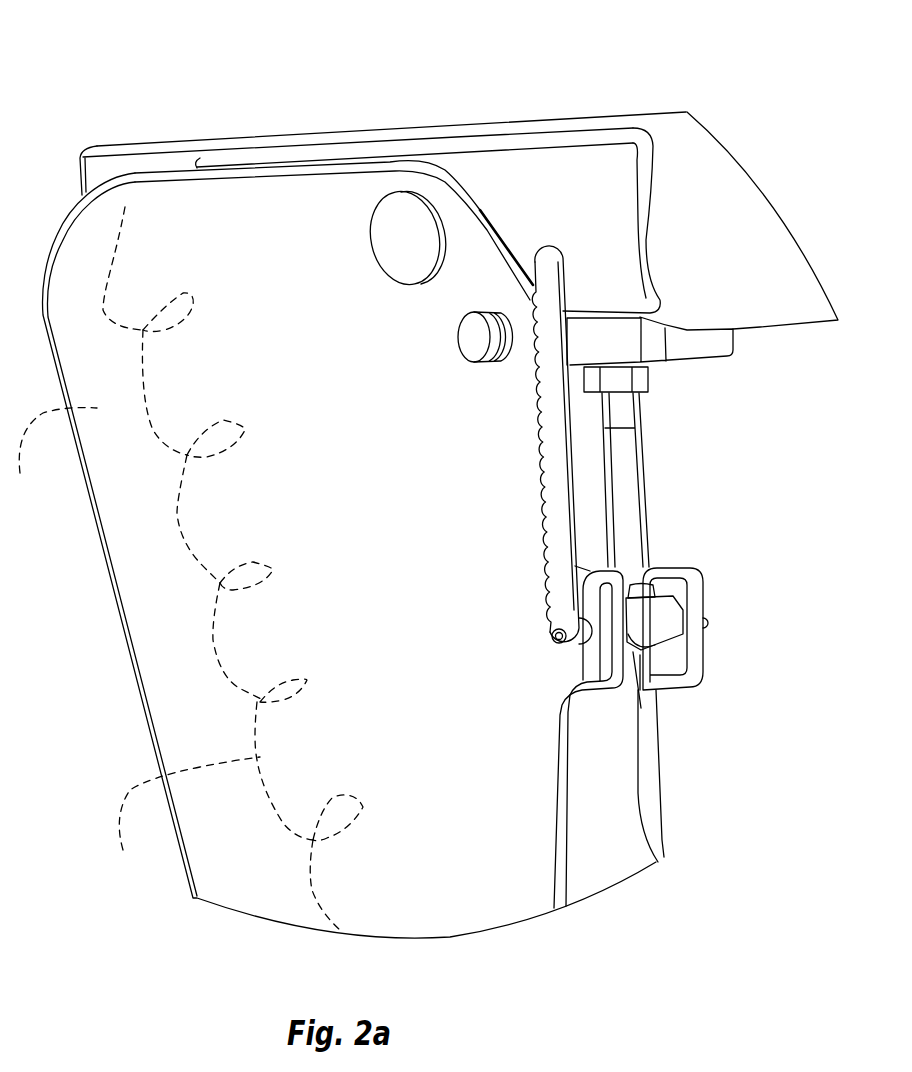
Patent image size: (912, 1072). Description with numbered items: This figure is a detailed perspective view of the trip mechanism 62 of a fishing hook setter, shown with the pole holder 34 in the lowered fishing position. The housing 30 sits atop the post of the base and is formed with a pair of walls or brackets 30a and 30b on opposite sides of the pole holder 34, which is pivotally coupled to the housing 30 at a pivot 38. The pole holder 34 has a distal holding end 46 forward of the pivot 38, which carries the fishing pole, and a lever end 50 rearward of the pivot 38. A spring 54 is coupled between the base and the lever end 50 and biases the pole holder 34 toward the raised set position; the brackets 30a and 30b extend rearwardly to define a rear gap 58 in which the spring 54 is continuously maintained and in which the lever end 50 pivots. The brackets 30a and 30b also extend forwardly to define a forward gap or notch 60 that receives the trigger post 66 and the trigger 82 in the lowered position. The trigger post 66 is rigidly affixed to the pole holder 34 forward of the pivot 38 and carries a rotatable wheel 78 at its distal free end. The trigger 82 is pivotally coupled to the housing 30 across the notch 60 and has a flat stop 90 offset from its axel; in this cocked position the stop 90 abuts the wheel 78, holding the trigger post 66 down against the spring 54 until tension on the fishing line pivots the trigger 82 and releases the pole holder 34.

The housing 30 is at (141, 686).
The bracket or flange 30a is at (577, 675).
The bracket or flange 30b is at (704, 655).
The pole holder 34 is at (680, 125).
The pivot 38 is at (415, 207).
The distal holding end 46 is at (733, 167).
The lever end 50 is at (277, 133).
The spring 54 is at (189, 825).
The rear gap 58 is at (58, 463).
The forward gap or notch 60 is at (673, 670).
The trip mechanism 62 is at (722, 547).
The trigger post 66 is at (623, 453).
The wheel 78 is at (656, 860).
The trigger 82 is at (537, 425).
The stop 90 is at (657, 613).